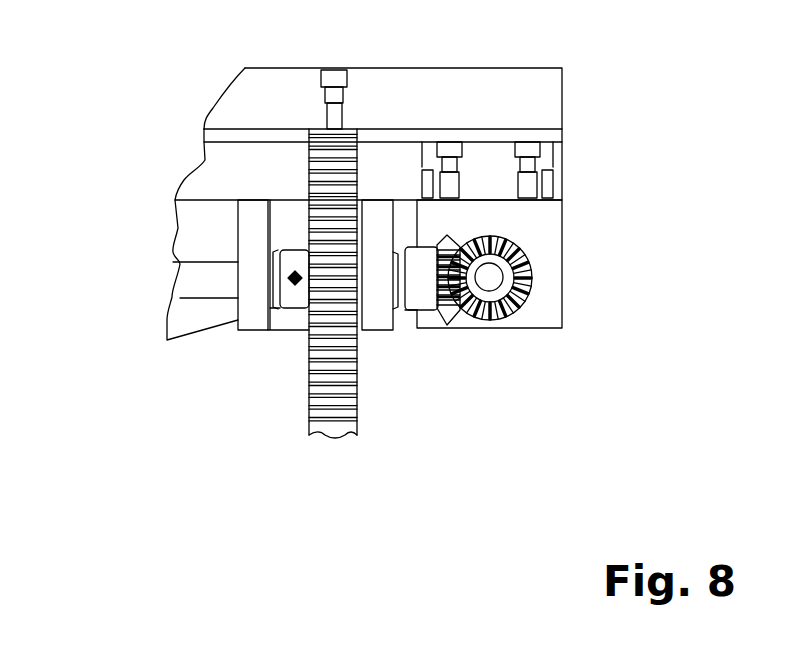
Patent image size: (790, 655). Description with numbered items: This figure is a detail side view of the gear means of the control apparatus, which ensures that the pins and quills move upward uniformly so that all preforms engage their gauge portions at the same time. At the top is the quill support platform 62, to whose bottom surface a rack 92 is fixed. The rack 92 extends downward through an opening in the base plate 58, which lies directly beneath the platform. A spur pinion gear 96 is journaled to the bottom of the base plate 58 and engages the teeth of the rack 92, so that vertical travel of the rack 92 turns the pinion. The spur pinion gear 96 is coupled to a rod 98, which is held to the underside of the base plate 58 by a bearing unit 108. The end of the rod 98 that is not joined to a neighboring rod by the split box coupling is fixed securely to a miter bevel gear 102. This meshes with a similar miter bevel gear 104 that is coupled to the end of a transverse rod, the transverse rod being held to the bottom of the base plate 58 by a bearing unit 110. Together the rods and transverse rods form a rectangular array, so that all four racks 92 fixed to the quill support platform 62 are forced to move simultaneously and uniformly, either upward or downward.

The base plate 58 is at (215, 168).
The quill support platform 62 is at (417, 92).
The rack 92 is at (342, 392).
The spur pinion gear 96 is at (316, 306).
The rod 98 is at (200, 283).
The miter bevel gear 102 is at (447, 320).
The miter bevel gear 104 is at (510, 312).
The bearing unit 108 is at (250, 325).
The bearing unit 110 is at (540, 310).